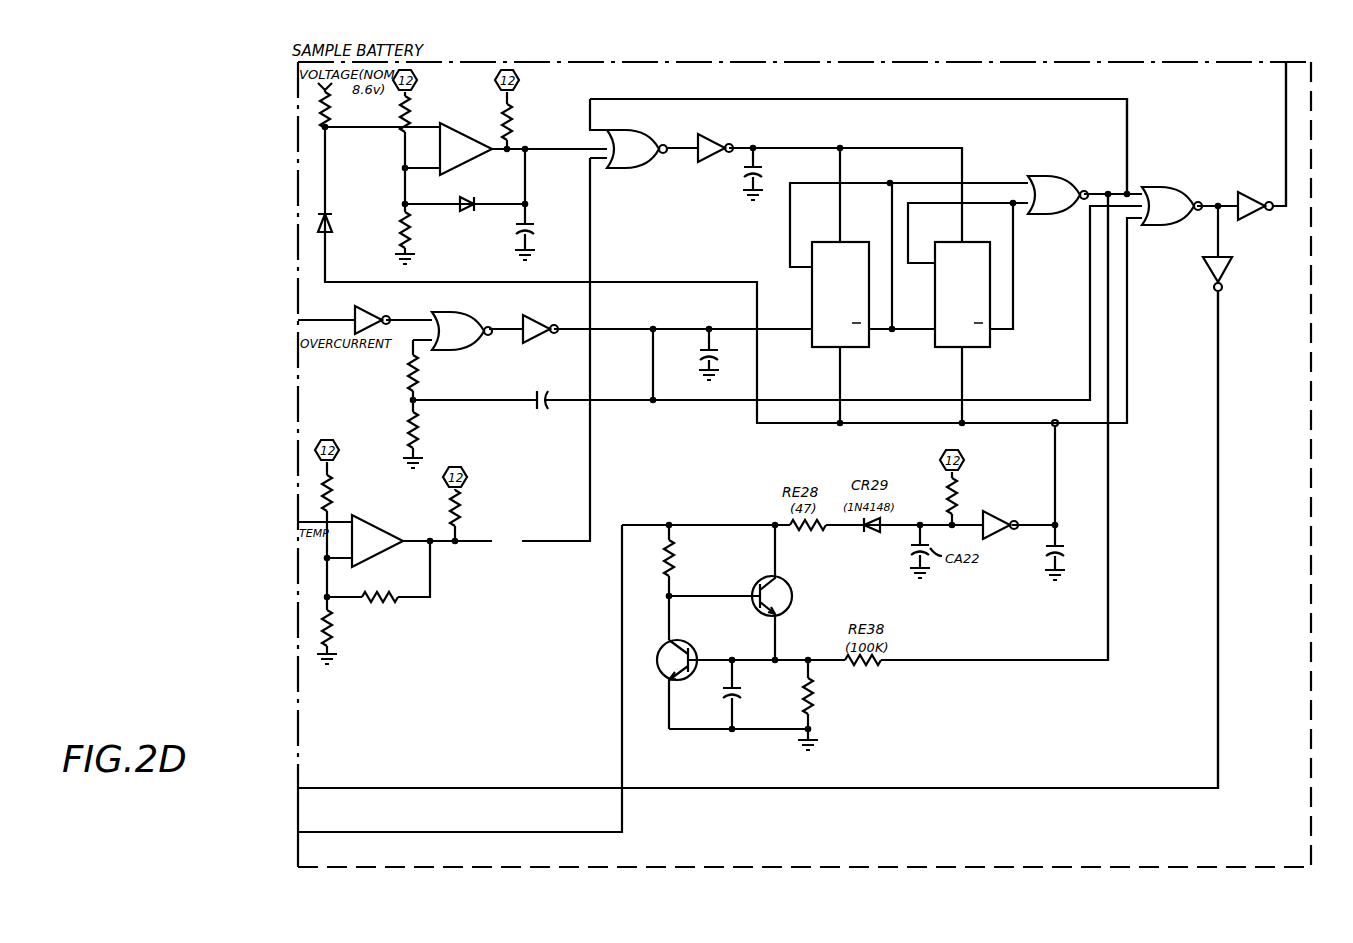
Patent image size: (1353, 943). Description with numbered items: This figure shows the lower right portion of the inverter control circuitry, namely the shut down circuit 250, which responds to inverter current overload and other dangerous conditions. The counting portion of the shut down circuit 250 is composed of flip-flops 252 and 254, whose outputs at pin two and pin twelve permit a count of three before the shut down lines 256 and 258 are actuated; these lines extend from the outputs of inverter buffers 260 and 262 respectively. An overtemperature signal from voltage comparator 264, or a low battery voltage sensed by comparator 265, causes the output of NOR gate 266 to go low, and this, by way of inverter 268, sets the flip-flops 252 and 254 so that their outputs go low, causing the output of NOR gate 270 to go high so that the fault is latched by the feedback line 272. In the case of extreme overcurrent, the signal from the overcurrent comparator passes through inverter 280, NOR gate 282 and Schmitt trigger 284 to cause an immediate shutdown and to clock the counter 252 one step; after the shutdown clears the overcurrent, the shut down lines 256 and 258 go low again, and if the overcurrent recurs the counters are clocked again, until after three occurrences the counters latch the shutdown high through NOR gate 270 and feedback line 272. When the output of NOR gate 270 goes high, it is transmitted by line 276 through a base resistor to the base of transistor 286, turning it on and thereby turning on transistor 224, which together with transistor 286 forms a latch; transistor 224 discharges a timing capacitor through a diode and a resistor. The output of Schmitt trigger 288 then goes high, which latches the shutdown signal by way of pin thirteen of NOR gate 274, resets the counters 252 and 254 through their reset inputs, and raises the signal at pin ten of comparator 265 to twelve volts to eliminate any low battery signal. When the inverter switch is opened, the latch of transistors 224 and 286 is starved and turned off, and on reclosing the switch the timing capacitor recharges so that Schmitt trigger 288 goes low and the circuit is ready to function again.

The transistor 224 is at (793, 598).
The shut down circuit 250 is at (899, 93).
The flip-flop 252 is at (810, 242).
The flip-flop 254 is at (932, 242).
The shut down line 256 is at (1284, 212).
The shut down line 258 is at (1219, 305).
The inverter buffer 260 is at (1252, 180).
The inverter buffer 262 is at (1203, 268).
The voltage comparator 264 is at (362, 518).
The comparator 265 is at (462, 118).
The NOR gate 266 is at (624, 130).
The inverter 268 is at (706, 132).
The NOR gate 270 is at (1048, 175).
The feedback line 272 is at (1047, 98).
The NOR gate 274 is at (1156, 185).
The line 276 is at (1110, 497).
The inverter 280 is at (361, 306).
The NOR gate 282 is at (447, 312).
The Schmitt trigger 284 is at (538, 311).
The transistor 286 is at (693, 651).
The Schmitt trigger 288 is at (985, 511).